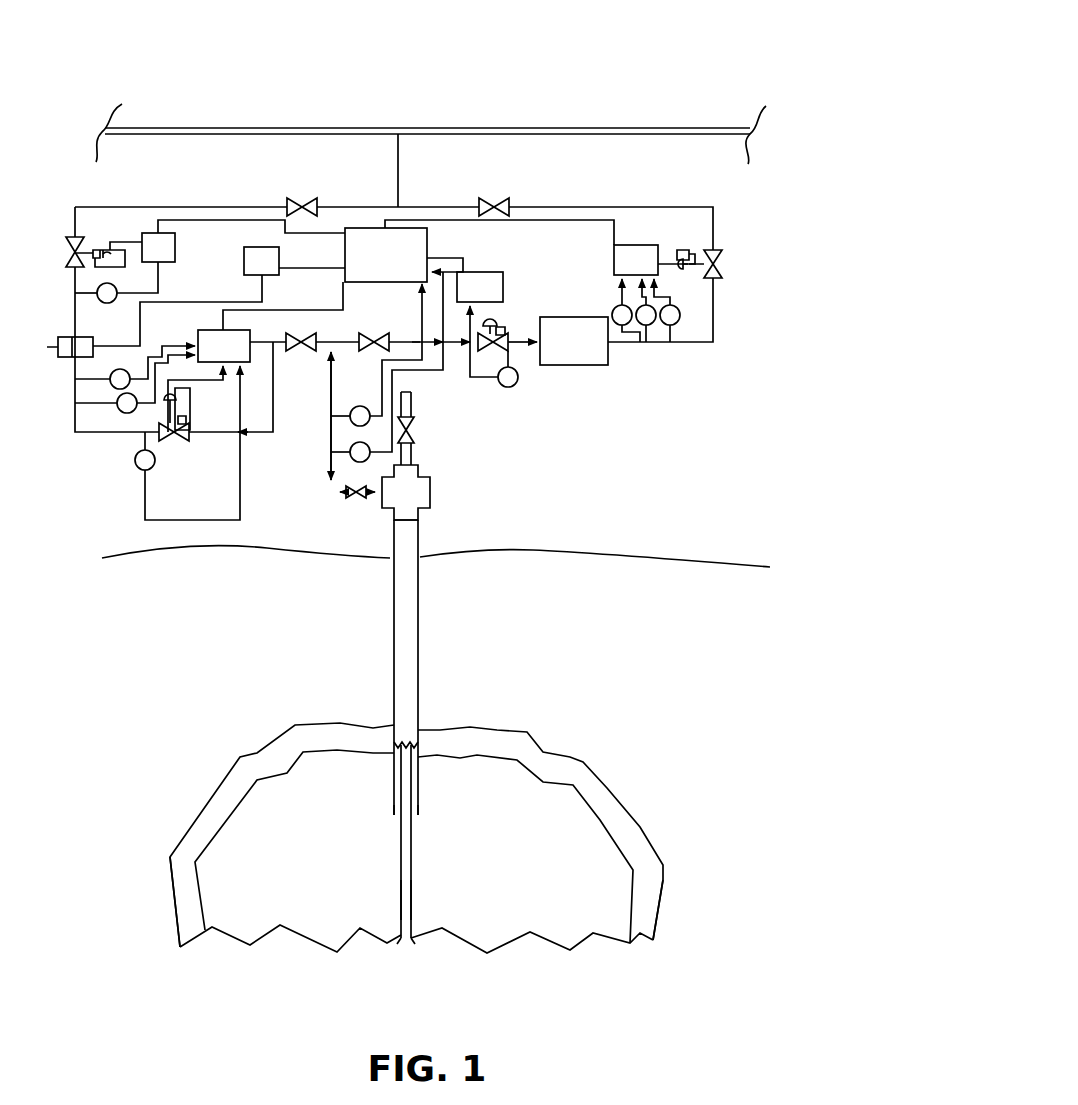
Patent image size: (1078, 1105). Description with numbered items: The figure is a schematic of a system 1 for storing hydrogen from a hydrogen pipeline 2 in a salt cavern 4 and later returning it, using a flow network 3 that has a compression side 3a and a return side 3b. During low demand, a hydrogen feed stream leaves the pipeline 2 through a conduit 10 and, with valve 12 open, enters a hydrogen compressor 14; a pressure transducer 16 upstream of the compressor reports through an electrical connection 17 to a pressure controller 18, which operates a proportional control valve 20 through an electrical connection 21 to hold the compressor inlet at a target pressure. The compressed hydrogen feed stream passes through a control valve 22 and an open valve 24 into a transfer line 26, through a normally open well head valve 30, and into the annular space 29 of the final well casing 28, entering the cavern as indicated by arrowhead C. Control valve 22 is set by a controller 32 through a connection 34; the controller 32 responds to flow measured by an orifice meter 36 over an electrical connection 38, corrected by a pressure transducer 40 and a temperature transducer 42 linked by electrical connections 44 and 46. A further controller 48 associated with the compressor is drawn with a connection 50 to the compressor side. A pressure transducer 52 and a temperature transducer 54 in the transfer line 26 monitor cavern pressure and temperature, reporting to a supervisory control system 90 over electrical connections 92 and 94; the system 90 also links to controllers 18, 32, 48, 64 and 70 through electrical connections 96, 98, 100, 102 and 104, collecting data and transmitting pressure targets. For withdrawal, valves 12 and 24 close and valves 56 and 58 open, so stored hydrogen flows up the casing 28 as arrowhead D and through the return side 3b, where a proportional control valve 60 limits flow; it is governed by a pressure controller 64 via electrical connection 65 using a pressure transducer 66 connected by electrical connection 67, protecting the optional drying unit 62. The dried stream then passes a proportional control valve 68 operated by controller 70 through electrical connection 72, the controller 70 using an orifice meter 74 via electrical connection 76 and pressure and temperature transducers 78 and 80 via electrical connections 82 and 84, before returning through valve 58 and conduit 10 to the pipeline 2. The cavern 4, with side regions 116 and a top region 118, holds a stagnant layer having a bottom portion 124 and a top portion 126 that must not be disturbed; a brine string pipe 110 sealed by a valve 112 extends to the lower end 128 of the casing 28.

The system 1 is at (693, 58).
The hydrogen pipeline 2 is at (521, 118).
The flow network 3 is at (740, 300).
The compression side 3a is at (126, 458).
The return side 3b is at (724, 381).
The salt cavern 4 is at (636, 765).
The conduit 10 is at (398, 175).
The valve 12 is at (307, 201).
The hydrogen compressor 14 is at (52, 348).
The pressure transducer 16 is at (106, 304).
The electrical connection 17 is at (160, 278).
The pressure controller 18 is at (176, 247).
The proportional control valve 20 is at (69, 241).
The electrical connection 21 is at (120, 243).
The control valve 22 is at (176, 446).
The valve 24 is at (301, 353).
The transfer line 26 is at (330, 451).
The final well casing 28 is at (393, 630).
The annular space 29 is at (399, 796).
The well head valve 30 is at (356, 500).
The controller 32 is at (242, 346).
The connection 34 is at (213, 382).
The orifice meter 36 is at (122, 371).
The electrical connection 38 is at (172, 345).
The pressure transducer 40 is at (139, 469).
The temperature transducer 42 is at (117, 408).
The electrical connection 44 is at (242, 505).
The electrical connection 46 is at (162, 406).
The controller 48 is at (280, 259).
The signal line 50 is at (219, 302).
The pressure transducer 52 is at (360, 406).
The temperature transducer 54 is at (358, 463).
The valve 56 is at (378, 333).
The valve 58 is at (487, 200).
The proportional control valve 60 is at (506, 339).
The drying unit 62 is at (585, 366).
The pressure controller 64 is at (493, 271).
The electrical connection 65 is at (500, 320).
The pressure transducer 66 is at (512, 387).
The electrical connection 67 is at (472, 380).
The proportional control valve 68 is at (727, 258).
The controller 70 is at (645, 244).
The electrical connection 72 is at (680, 250).
The orifice meter 74 is at (647, 330).
The electrical connection 76 is at (620, 297).
The pressure transducer 78 is at (622, 335).
The temperature transducer 80 is at (671, 330).
The electrical connection 82 is at (614, 301).
The electrical connection 84 is at (662, 297).
The supervisory control system 90 is at (372, 284).
The electrical connection 92 is at (380, 361).
The electrical connection 94 is at (433, 372).
The electrical connection 96 is at (270, 221).
The electrical connection 98 is at (283, 310).
The electrical connection 100 is at (338, 270).
The electrical connection 102 is at (450, 256).
The electrical connection 104 is at (558, 221).
The pipe 110 is at (410, 897).
The valve 112 is at (420, 432).
The side regions 116 is at (172, 893).
The top region 118 is at (527, 731).
The bottom portion 124 is at (188, 918).
The top portion 126 is at (547, 770).
The lower end 128 is at (395, 817).
The arrowhead C is at (395, 833).
The arrowhead D is at (419, 826).